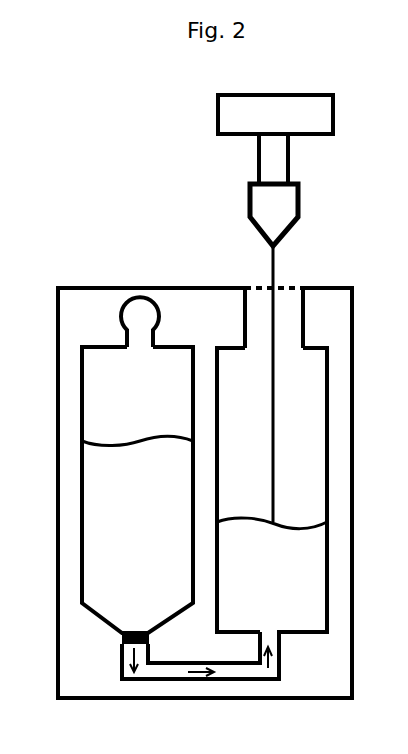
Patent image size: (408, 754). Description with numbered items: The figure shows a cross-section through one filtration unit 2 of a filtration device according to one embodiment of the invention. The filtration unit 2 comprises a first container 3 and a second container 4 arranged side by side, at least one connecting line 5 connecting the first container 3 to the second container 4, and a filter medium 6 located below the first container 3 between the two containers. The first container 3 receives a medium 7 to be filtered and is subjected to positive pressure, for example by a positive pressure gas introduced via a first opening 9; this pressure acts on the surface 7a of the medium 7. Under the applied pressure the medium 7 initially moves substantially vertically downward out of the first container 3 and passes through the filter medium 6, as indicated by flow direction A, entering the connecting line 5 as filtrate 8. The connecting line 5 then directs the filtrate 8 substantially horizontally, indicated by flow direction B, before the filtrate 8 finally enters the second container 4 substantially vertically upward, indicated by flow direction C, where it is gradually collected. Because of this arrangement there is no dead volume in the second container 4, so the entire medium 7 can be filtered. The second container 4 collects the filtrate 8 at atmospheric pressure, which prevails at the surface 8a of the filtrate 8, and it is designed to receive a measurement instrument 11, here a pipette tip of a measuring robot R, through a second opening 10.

The filtration unit 2 is at (61, 287).
The first container 3 is at (104, 490).
The second container 4 is at (300, 490).
The connecting line 5 is at (160, 680).
The filter medium 6 is at (122, 637).
The medium to be filtered 7 is at (140, 582).
The surface of the medium to be filtered 7a is at (141, 440).
The filtrate 8 is at (274, 584).
The surface of the filtrate 8a is at (250, 520).
The first opening 9 is at (137, 310).
The second opening 10 is at (282, 298).
The measurement instrument 11 is at (251, 206).
The measuring robot R is at (216, 106).
The flow direction A is at (119, 659).
The flow direction B is at (201, 658).
The flow direction C is at (280, 657).